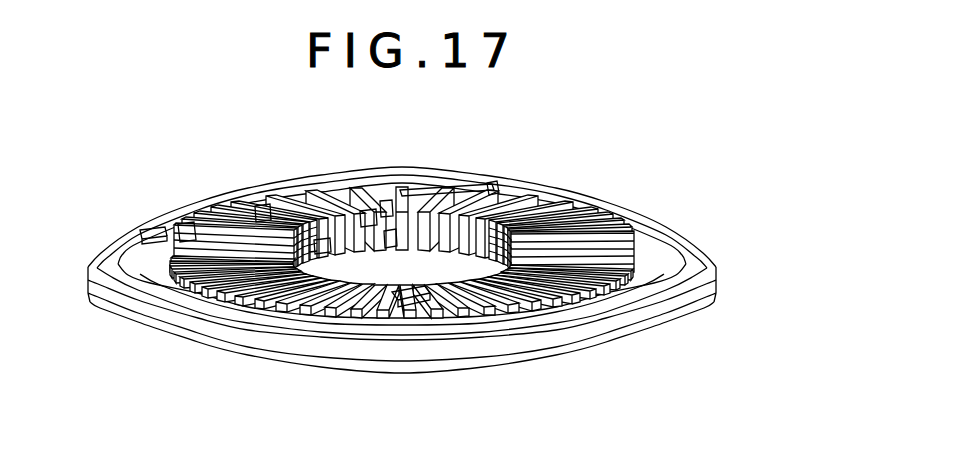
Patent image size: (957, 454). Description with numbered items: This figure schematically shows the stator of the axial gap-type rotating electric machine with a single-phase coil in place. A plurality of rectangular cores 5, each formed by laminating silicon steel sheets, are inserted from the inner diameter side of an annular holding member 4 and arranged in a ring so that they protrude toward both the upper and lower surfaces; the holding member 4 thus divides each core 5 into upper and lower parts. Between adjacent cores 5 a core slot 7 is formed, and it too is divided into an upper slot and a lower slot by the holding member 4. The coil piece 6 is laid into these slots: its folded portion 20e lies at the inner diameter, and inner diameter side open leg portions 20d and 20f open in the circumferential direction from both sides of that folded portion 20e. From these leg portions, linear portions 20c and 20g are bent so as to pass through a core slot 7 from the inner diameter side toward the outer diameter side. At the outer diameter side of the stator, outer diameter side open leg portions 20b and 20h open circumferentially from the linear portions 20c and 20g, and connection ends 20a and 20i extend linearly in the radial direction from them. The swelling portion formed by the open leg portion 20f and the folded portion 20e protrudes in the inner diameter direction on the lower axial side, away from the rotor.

The holding member 4 is at (122, 275).
The core 5 is at (463, 312).
The coil piece 6 is at (650, 243).
The core slot 7 is at (437, 312).
The connection end 20a is at (492, 183).
The outer diameter side open leg portion 20b is at (417, 190).
The linear portion 20c is at (388, 200).
The inner diameter side open leg portion 20d is at (367, 210).
The folded portion 20e is at (389, 237).
The inner diameter side open leg portion 20f is at (320, 247).
The linear portion 20g is at (262, 205).
The outer diameter side open leg portion 20h is at (183, 227).
The connection end 20i is at (148, 233).